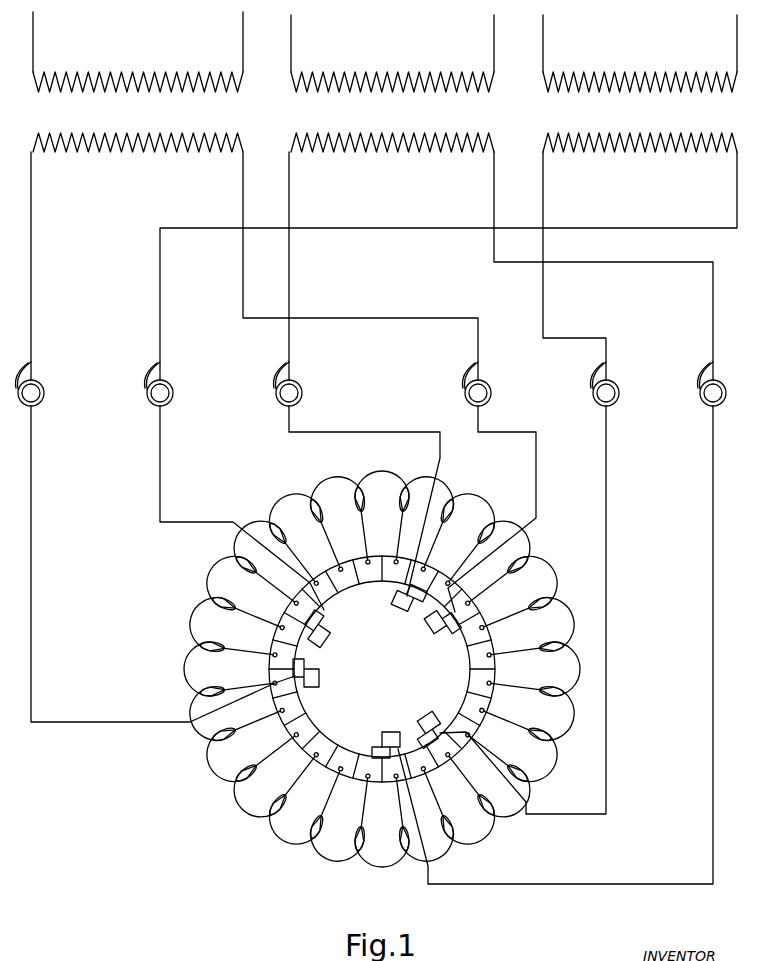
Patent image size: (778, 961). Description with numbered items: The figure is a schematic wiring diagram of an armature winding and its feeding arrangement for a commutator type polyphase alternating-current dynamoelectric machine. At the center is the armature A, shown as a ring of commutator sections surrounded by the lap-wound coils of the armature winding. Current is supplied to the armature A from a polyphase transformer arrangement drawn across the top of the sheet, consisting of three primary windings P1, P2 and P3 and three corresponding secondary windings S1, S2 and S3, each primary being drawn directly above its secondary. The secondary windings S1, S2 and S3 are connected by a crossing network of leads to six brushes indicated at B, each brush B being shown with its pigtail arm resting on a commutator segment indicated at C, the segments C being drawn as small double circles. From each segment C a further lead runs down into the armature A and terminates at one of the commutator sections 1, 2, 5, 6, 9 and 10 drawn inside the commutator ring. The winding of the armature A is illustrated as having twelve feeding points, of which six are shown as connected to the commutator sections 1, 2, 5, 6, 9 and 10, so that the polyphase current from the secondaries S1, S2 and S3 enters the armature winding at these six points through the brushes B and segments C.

The commutator section 1 is at (315, 638).
The commutator section 2 is at (307, 667).
The commutator section 5 is at (418, 610).
The commutator section 6 is at (450, 637).
The commutator section 9 is at (413, 732).
The commutator section 10 is at (377, 747).
The armature A is at (322, 728).
The brushes B is at (32, 361).
The commutator segments C is at (25, 402).
The primary winding P1 is at (112, 70).
The primary winding P2 is at (378, 72).
The primary winding P3 is at (632, 72).
The secondary winding S1 is at (113, 152).
The secondary winding S2 is at (385, 152).
The secondary winding S3 is at (635, 152).